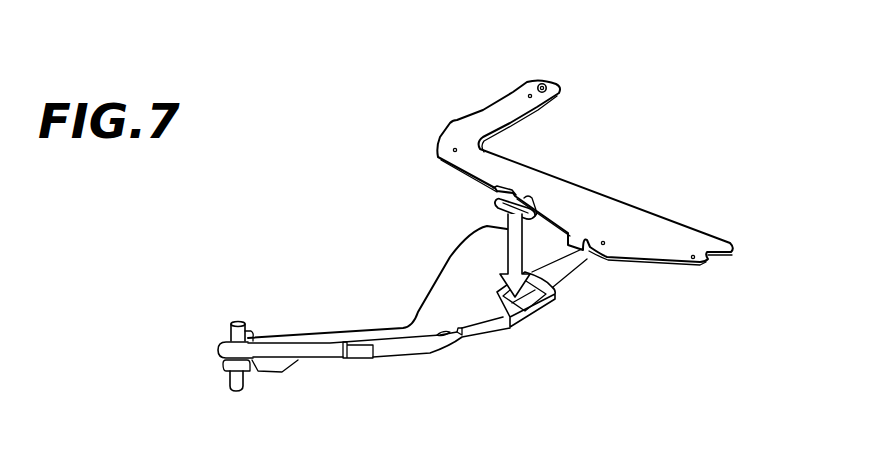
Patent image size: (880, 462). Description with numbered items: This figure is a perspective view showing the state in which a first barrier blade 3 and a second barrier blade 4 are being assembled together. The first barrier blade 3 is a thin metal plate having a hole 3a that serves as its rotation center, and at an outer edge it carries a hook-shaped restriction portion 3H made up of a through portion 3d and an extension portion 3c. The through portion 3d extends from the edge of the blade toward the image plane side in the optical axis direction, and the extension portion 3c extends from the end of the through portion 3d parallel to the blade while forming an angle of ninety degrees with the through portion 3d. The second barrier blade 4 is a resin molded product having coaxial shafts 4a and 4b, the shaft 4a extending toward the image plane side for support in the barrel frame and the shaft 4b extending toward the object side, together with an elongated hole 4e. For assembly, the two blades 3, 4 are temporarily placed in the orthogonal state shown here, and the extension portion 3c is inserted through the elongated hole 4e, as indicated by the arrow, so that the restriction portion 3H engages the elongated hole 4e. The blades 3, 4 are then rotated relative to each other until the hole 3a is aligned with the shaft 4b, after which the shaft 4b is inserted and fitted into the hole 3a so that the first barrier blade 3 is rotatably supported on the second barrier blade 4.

The first barrier blade 3 is at (560, 155).
The hole 3a is at (542, 83).
The restriction portion 3H is at (439, 201).
The through portion 3d is at (503, 196).
The extension portion 3c is at (503, 207).
The second barrier blade 4 is at (388, 316).
The shaft 4a is at (231, 383).
The shaft 4b is at (232, 330).
The elongated hole 4e is at (555, 292).